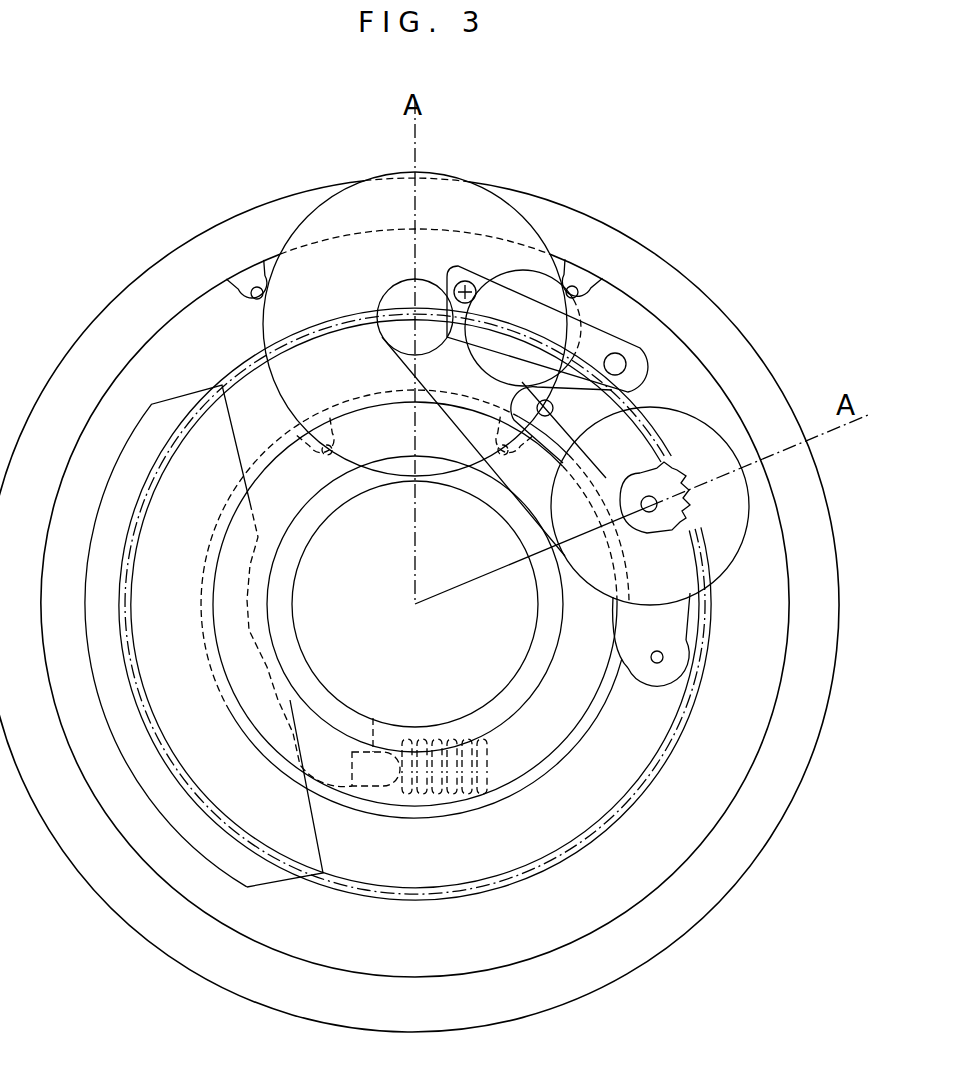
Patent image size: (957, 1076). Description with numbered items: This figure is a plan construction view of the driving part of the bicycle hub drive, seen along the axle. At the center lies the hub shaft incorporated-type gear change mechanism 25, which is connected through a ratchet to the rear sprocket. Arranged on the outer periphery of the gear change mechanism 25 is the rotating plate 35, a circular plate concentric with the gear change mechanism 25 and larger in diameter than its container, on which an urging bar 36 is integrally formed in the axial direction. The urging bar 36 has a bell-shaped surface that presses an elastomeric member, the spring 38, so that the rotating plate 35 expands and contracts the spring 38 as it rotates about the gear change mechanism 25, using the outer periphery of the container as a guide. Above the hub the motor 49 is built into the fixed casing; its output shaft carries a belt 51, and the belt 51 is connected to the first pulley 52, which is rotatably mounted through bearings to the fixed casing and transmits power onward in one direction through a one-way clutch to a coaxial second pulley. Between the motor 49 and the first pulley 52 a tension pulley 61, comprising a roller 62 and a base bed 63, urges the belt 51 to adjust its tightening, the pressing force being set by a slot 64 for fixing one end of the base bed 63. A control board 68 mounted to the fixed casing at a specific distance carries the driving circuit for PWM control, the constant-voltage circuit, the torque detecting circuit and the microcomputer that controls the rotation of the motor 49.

The gear change mechanism 25 is at (495, 672).
The rotating plate 35 is at (268, 657).
The urging bar 36 is at (380, 750).
The spring 38 is at (425, 820).
The motor 49 is at (322, 217).
The belt 51 is at (478, 480).
The first pulley 52 is at (712, 420).
The tension pulley 61 is at (592, 336).
The roller 62 is at (545, 283).
The base bed 63 is at (636, 350).
The slot 64 is at (482, 288).
The control board 68 is at (260, 873).